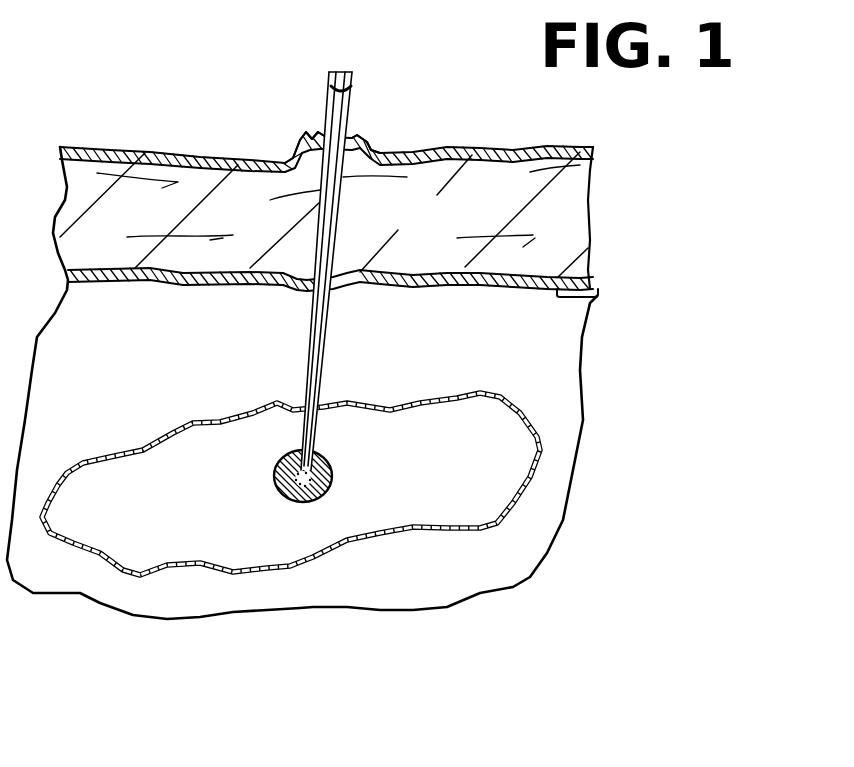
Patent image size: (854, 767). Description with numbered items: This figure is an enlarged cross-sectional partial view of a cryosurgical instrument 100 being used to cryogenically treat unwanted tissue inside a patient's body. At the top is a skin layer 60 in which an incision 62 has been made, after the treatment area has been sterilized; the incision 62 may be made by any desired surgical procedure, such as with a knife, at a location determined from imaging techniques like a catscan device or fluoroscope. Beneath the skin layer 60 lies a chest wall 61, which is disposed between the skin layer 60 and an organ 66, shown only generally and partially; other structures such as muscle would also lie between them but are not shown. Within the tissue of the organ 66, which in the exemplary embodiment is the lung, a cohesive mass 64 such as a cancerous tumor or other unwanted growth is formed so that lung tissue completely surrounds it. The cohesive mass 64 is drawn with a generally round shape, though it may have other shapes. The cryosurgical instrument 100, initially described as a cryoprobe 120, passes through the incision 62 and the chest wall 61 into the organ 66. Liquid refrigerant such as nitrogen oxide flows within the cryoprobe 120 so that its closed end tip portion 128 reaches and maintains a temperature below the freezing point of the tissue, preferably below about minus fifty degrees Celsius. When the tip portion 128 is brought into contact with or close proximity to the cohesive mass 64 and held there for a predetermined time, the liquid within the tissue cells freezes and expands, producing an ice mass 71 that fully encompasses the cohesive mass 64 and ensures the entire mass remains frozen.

The skin layer 60 is at (98, 175).
The chest wall 61 is at (598, 292).
The incision 62 is at (322, 128).
The cohesive mass 64 is at (320, 500).
The organ 66 is at (145, 555).
The ice mass 71 is at (282, 496).
The cryosurgical instrument 100 is at (352, 108).
The cryoprobe 120 is at (348, 237).
The tip portion 128 is at (323, 467).